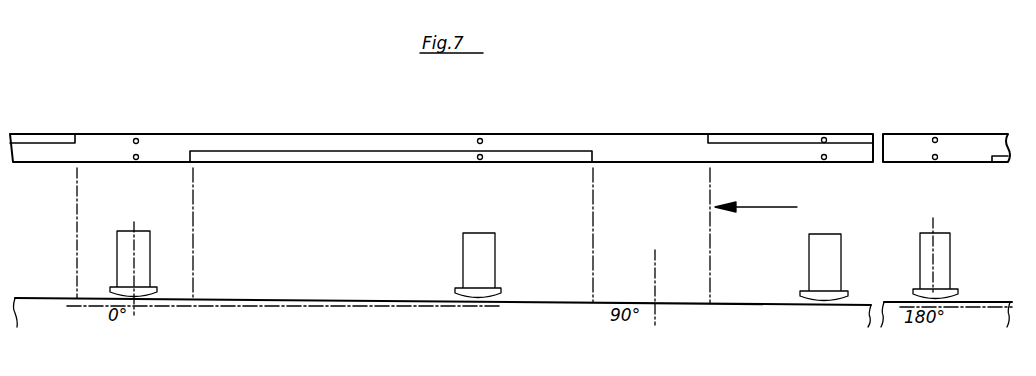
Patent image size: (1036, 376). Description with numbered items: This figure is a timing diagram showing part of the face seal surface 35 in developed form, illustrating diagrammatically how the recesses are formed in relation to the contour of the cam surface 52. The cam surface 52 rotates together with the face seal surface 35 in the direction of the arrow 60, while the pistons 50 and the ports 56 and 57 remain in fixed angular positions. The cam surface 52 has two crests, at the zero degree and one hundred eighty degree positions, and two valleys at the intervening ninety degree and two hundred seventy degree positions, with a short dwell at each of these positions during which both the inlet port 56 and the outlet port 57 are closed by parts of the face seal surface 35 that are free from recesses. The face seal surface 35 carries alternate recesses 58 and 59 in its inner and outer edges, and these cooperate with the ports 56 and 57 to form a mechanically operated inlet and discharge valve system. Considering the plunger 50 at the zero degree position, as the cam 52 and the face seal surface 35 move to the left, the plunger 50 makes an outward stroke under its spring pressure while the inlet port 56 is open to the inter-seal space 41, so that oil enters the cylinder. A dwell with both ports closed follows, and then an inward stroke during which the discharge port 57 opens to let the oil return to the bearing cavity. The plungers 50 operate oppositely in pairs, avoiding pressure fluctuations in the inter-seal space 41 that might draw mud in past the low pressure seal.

The face seal surface 35 is at (100, 152).
The recess 59 is at (50, 141).
The recess 58 is at (365, 161).
The outlet passage 57 is at (139, 140).
The inlet passage 56 is at (139, 156).
The inter-seal space 41 is at (287, 236).
The arrow 60 is at (756, 199).
The piston 50 is at (143, 269).
The cam surface 52 is at (288, 298).